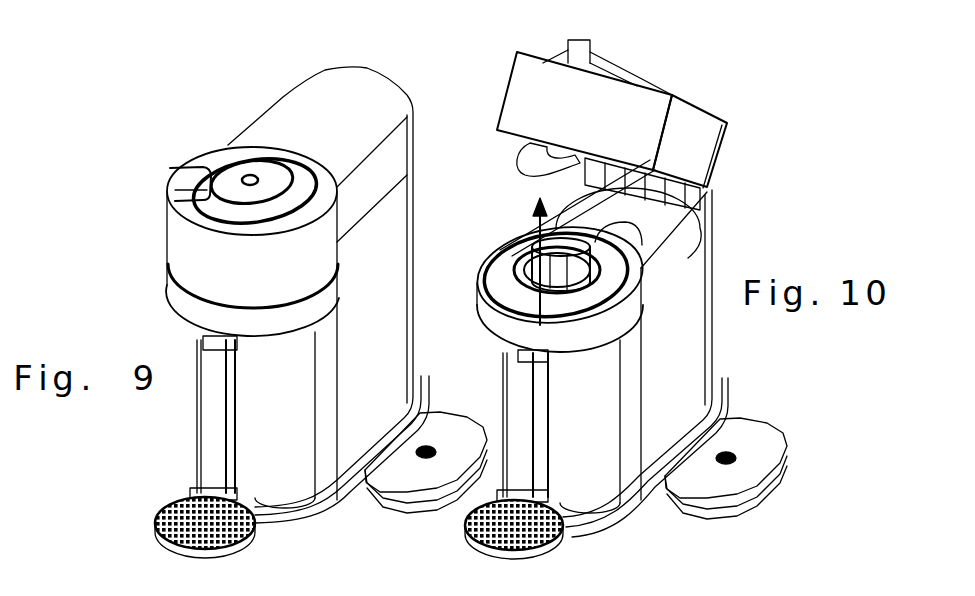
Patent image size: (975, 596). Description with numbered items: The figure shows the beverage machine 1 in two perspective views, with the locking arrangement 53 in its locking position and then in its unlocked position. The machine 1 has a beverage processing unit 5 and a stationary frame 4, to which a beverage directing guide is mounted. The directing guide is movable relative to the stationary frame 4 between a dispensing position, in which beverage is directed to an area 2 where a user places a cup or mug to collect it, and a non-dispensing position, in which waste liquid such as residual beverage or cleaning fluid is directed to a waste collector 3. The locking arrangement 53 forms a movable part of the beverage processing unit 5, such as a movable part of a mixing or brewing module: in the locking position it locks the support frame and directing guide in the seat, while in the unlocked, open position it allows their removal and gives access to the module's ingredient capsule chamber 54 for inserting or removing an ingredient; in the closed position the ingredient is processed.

In FIG. 9, the machine 1 is at (143, 63).
In FIG. 10, the machine 1 is at (803, 101).
In FIG. 9, the area 2 is at (157, 514).
In FIG. 10, the area 2 is at (533, 547).
In FIG. 10, the waste collector 3 is at (687, 322).
In FIG. 10, the stationary frame 4 is at (592, 494).
In FIG. 10, the beverage processing unit 5 is at (500, 247).
In FIG. 9, the locking arrangement 53 is at (183, 258).
In FIG. 10, the locking arrangement 53 is at (533, 112).
In FIG. 10, the ingredient capsule chamber 54 is at (528, 242).